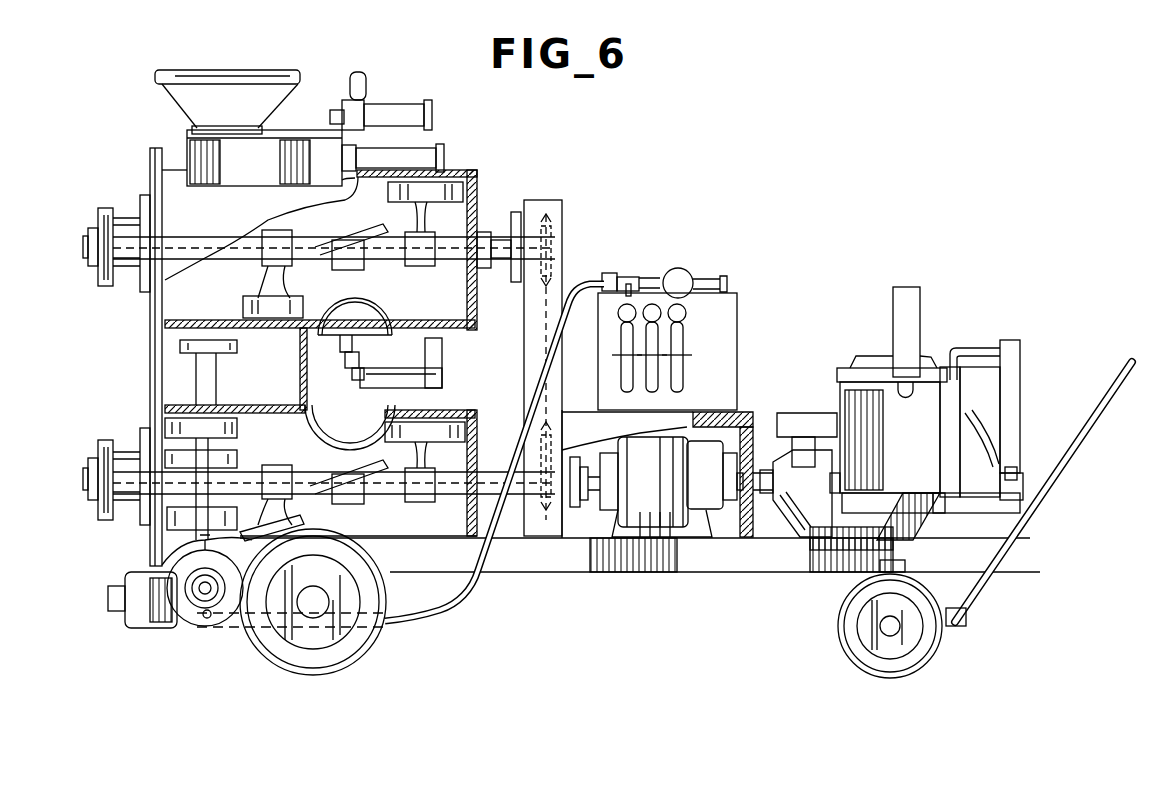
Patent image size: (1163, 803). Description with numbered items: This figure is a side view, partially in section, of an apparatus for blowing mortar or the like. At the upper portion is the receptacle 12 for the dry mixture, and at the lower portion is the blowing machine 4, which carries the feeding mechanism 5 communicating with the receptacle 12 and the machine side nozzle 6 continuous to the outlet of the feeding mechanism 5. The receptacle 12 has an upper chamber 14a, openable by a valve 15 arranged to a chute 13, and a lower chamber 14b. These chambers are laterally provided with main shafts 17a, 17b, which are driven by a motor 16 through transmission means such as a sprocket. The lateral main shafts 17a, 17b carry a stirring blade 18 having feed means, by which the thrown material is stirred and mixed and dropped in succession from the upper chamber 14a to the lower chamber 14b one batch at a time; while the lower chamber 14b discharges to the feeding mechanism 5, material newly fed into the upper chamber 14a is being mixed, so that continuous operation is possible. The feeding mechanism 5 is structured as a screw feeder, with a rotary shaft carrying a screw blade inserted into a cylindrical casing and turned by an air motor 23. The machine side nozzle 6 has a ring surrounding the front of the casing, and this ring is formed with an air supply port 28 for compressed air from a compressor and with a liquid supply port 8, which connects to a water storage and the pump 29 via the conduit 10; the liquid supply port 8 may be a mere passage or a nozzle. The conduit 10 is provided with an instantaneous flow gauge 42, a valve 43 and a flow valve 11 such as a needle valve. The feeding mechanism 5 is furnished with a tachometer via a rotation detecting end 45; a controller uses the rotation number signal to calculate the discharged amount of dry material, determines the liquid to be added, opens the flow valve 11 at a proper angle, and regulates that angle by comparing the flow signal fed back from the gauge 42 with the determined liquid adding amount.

The blowing machine 4 is at (148, 352).
The feeding mechanism 5 is at (185, 628).
The machine side nozzle 6 is at (215, 600).
The liquid supply port 8 is at (208, 618).
The conduit 10 is at (427, 622).
The flow valve 11 is at (608, 272).
The receptacle 12 is at (495, 360).
The chute 13 is at (300, 349).
The upper chamber 14a is at (462, 308).
The lower chamber 14b is at (442, 455).
The valve 15 is at (348, 332).
The motor 16 is at (853, 405).
The main shaft 17a is at (451, 255).
The main shaft 17b is at (247, 480).
The stirring blade 18 is at (457, 187).
The air motor 23 is at (140, 628).
The air supply port 28 is at (195, 542).
The pump 29 is at (725, 330).
The instantaneous flow gauge 42 is at (680, 270).
The valve 43 is at (628, 277).
The rotation detecting end 45 is at (108, 597).